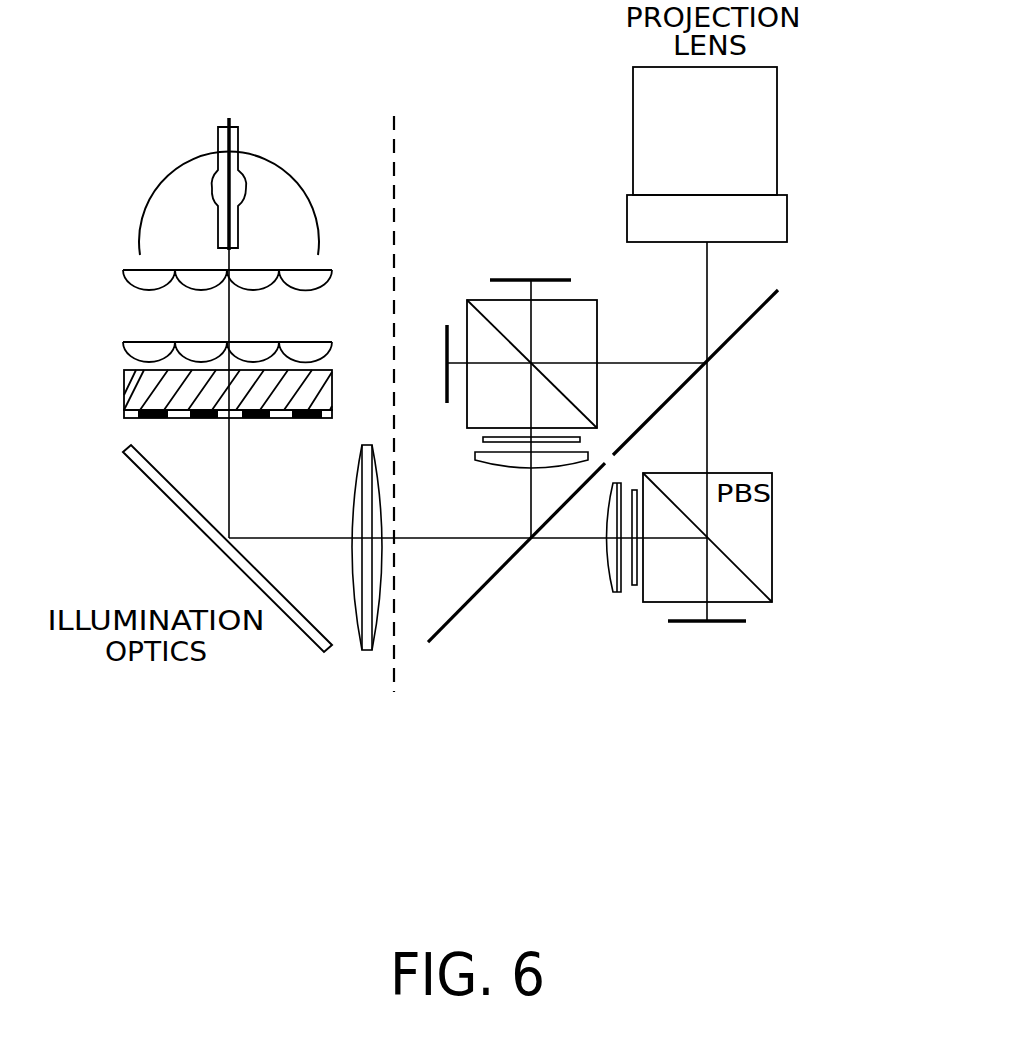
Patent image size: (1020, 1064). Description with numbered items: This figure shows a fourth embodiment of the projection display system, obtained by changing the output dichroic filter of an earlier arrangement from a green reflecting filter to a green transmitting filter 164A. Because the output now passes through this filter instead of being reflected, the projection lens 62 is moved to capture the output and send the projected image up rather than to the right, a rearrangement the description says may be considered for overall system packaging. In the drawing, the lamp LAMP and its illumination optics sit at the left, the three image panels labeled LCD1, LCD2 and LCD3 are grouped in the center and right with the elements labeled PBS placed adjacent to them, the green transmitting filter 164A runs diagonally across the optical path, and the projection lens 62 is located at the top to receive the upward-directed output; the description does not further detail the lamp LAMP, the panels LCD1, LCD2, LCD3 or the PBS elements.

The projection lens 62 is at (761, 122).
The green transmitting filter 164A is at (755, 322).
The lamp LAMP is at (186, 183).
The first LCD panel LCD1 is at (707, 639).
The second LCD panel LCD2 is at (405, 364).
The third LCD panel LCD3 is at (530, 262).
The polarizing beam splitter PBS is at (532, 364).